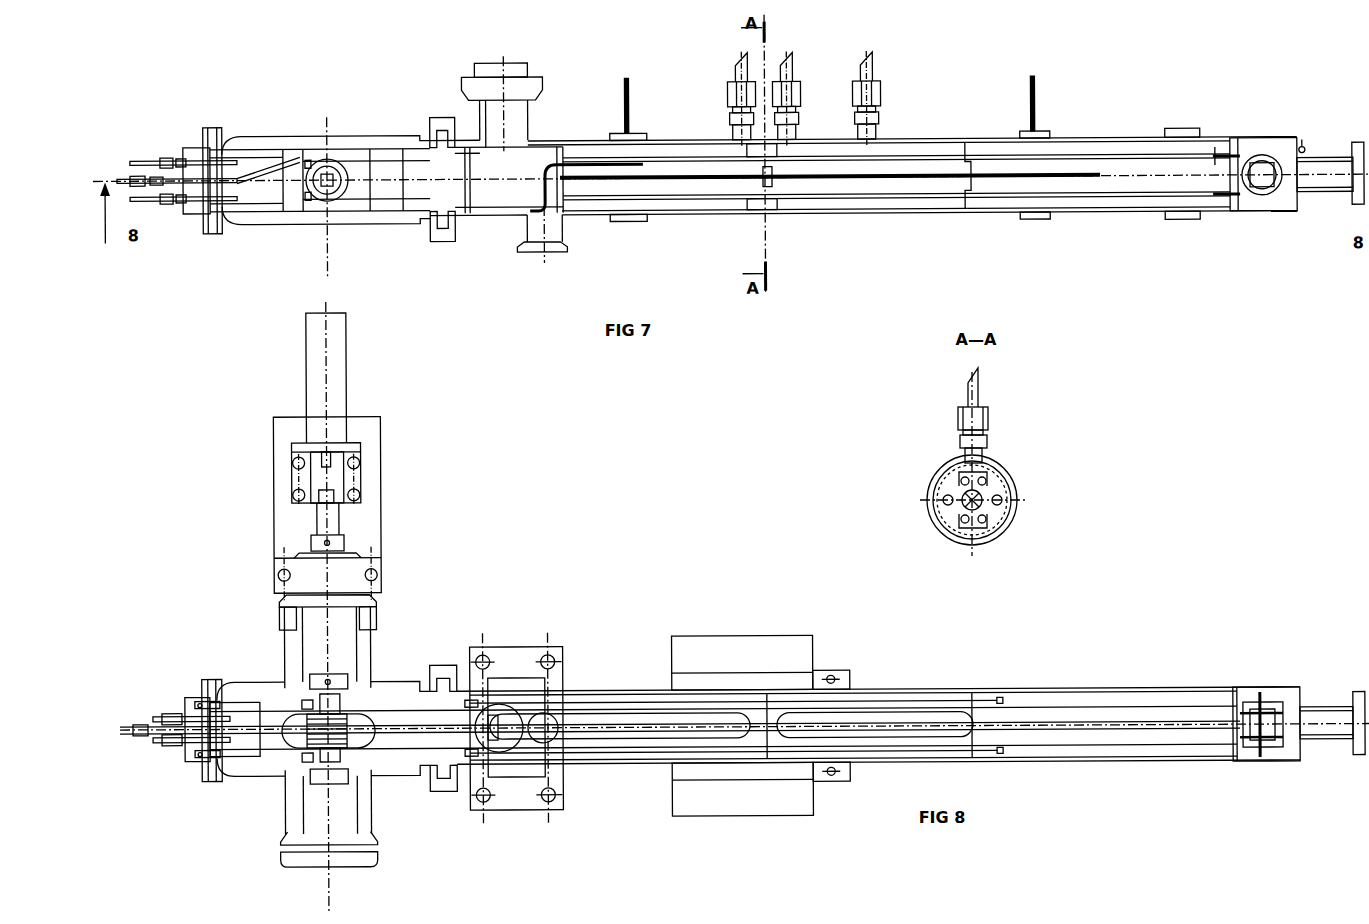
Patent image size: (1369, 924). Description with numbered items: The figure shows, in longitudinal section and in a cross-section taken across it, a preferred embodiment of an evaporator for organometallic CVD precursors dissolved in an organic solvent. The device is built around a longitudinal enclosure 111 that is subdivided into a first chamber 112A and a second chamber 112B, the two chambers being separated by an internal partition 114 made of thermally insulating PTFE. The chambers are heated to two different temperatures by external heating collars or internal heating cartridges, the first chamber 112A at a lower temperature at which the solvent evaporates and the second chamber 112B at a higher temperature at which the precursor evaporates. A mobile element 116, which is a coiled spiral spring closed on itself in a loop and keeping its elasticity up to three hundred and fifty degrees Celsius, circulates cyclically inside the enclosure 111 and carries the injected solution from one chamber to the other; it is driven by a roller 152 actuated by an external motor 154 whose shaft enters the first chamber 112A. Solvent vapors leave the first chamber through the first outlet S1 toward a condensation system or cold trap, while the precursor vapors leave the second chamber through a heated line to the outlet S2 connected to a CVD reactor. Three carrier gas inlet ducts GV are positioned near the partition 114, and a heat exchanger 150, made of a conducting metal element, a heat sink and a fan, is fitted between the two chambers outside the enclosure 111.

In FIG. 7, the longitudinal enclosure 111 is at (912, 149).
In FIG. 8, the longitudinal enclosure 111 is at (1055, 689).
In FIG. 7, the first chamber 112A is at (607, 203).
In FIG. 7, the second chamber 112B is at (1091, 203).
In FIG. 7, the internal partition 114 is at (821, 202).
In FIG. 7, the mobile element 116 is at (667, 157).
In FIG. 8, the heat exchanger 150 is at (743, 652).
In FIG. 7, the roller 152 is at (333, 158).
In FIG. 8, the external motor 154 is at (362, 487).
In FIG. 7, the carrier gas inlet ducts GV is at (745, 61).
In FIG. 7, the first outlet S1 is at (553, 255).
In FIG. 8, the second outlet S2 is at (1337, 739).